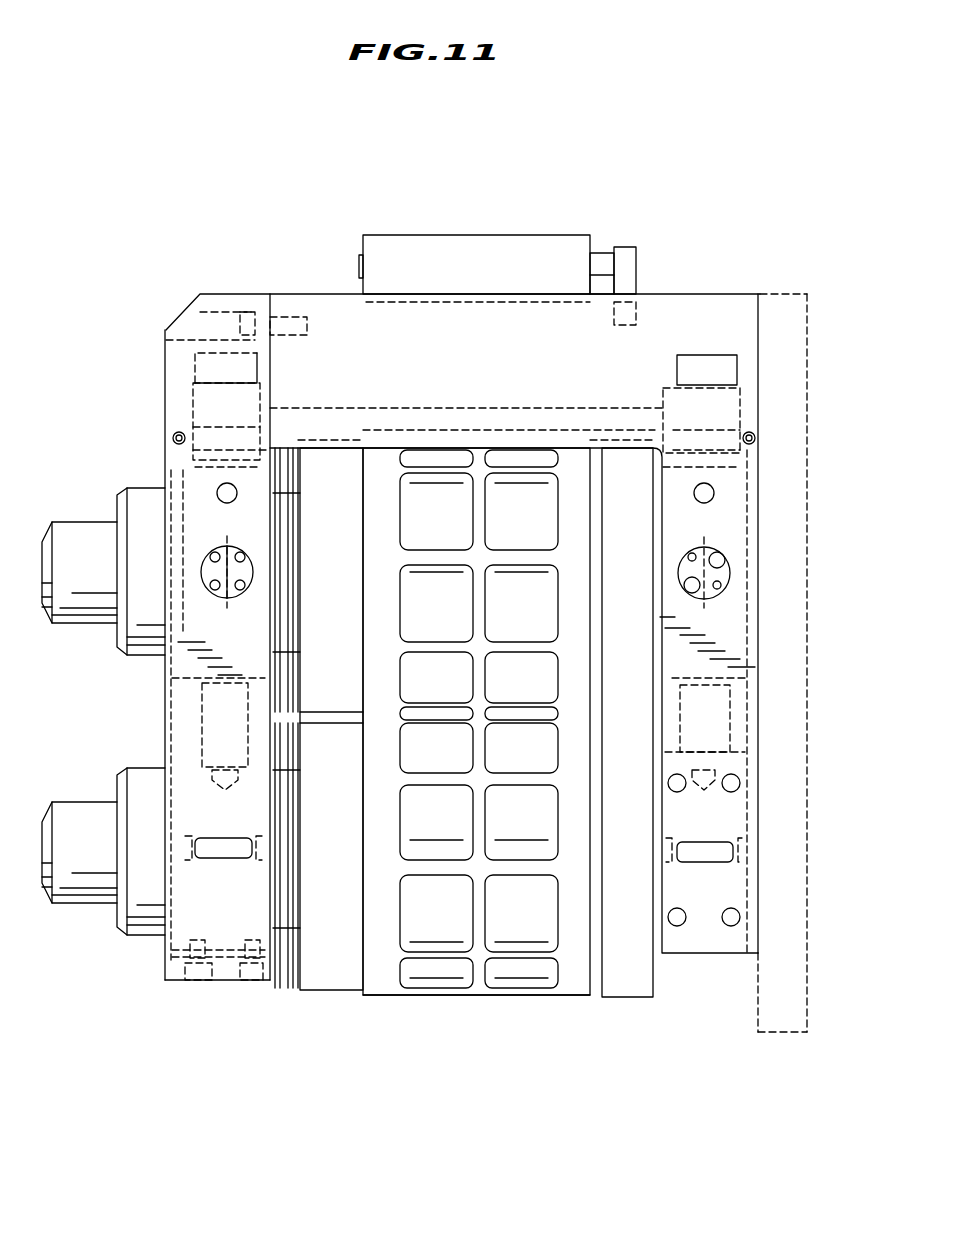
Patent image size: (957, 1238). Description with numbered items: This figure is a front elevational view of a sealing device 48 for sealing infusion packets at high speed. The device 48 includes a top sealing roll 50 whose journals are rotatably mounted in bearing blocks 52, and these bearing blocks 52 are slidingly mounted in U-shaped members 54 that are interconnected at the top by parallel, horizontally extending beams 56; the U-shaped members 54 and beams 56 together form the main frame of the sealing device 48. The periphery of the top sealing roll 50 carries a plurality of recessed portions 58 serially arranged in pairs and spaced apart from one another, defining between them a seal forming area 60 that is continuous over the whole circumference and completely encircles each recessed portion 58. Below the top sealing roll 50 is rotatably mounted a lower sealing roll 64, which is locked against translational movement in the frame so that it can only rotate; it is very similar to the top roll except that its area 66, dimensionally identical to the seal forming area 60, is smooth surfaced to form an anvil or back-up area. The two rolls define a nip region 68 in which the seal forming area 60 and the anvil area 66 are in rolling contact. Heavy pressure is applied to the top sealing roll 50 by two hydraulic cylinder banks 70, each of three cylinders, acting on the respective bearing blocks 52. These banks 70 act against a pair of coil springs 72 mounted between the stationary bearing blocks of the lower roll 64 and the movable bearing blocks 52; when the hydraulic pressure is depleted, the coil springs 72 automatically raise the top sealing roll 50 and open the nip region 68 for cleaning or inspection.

The sealing device 48 is at (188, 278).
The top sealing roll 50 is at (326, 458).
The bearing blocks 52 is at (165, 480).
The U-shaped members 54 is at (165, 732).
The beams 56 is at (714, 304).
The recessed portions 58 is at (437, 490).
The seal forming area 60 is at (388, 470).
The lower sealing roll 64 is at (377, 980).
The area 66 is at (385, 865).
The nip region 68 is at (349, 688).
The hydraulic cylinder banks 70 is at (258, 369).
The coil springs 72 is at (200, 688).